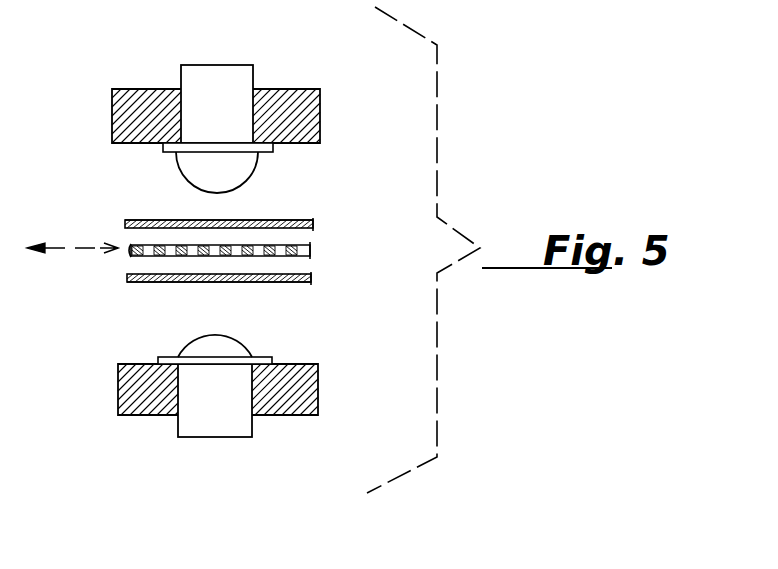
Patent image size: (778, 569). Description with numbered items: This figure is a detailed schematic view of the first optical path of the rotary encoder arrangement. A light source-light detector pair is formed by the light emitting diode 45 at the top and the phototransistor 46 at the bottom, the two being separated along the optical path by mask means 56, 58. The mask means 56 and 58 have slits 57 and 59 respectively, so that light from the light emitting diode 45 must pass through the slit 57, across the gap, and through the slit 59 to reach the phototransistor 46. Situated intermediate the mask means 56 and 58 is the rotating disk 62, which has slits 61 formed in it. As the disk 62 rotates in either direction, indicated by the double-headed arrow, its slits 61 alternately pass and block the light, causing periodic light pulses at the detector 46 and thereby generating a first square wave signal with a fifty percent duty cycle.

The light emitting diode 45 is at (248, 163).
The phototransistor 46 is at (237, 350).
The mask means 56 is at (152, 218).
The slit 57 is at (218, 224).
The mask means 58 is at (148, 283).
The slit 59 is at (218, 283).
The slits 61 is at (285, 246).
The rotating disk 62 is at (310, 252).